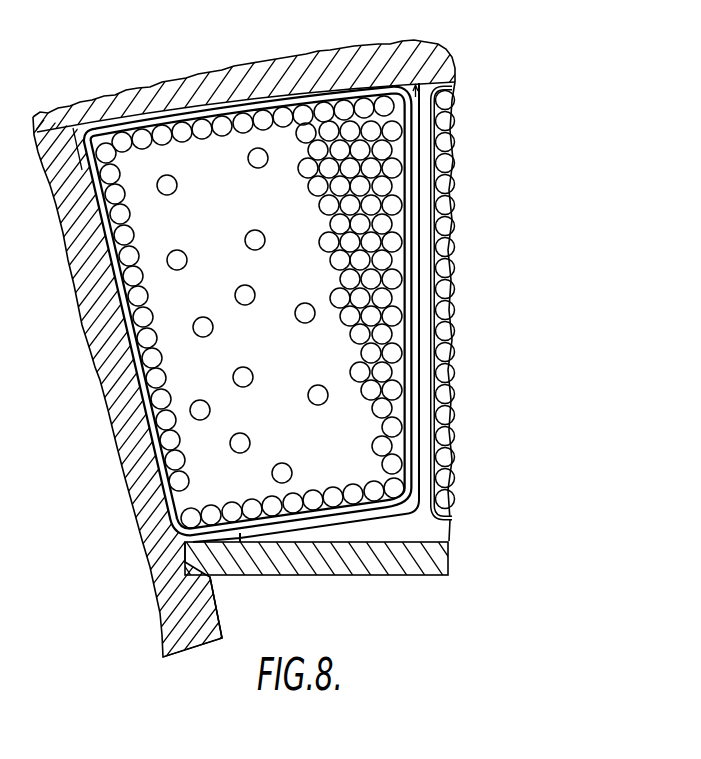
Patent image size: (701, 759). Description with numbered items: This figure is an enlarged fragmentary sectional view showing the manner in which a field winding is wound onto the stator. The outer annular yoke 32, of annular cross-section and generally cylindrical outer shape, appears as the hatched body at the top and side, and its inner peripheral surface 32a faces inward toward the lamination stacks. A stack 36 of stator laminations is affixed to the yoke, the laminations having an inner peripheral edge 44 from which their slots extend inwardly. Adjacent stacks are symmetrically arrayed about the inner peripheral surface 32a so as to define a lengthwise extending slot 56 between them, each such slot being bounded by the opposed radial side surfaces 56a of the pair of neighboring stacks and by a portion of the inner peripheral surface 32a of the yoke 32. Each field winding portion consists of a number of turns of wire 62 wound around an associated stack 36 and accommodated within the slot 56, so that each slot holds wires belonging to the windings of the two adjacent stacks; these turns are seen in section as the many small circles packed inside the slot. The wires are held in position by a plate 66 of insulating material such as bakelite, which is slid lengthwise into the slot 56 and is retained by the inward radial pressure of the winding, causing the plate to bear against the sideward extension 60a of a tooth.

The outer annular yoke 32 is at (422, 65).
The inner peripheral surface 32a is at (424, 106).
The stack 36 is at (120, 475).
The inner peripheral edge 44 is at (192, 653).
The slot 56 is at (408, 578).
The radial side surface 56a is at (120, 352).
The sideward extension 60a is at (226, 613).
The wire 62 is at (392, 227).
The plate 66 is at (337, 562).